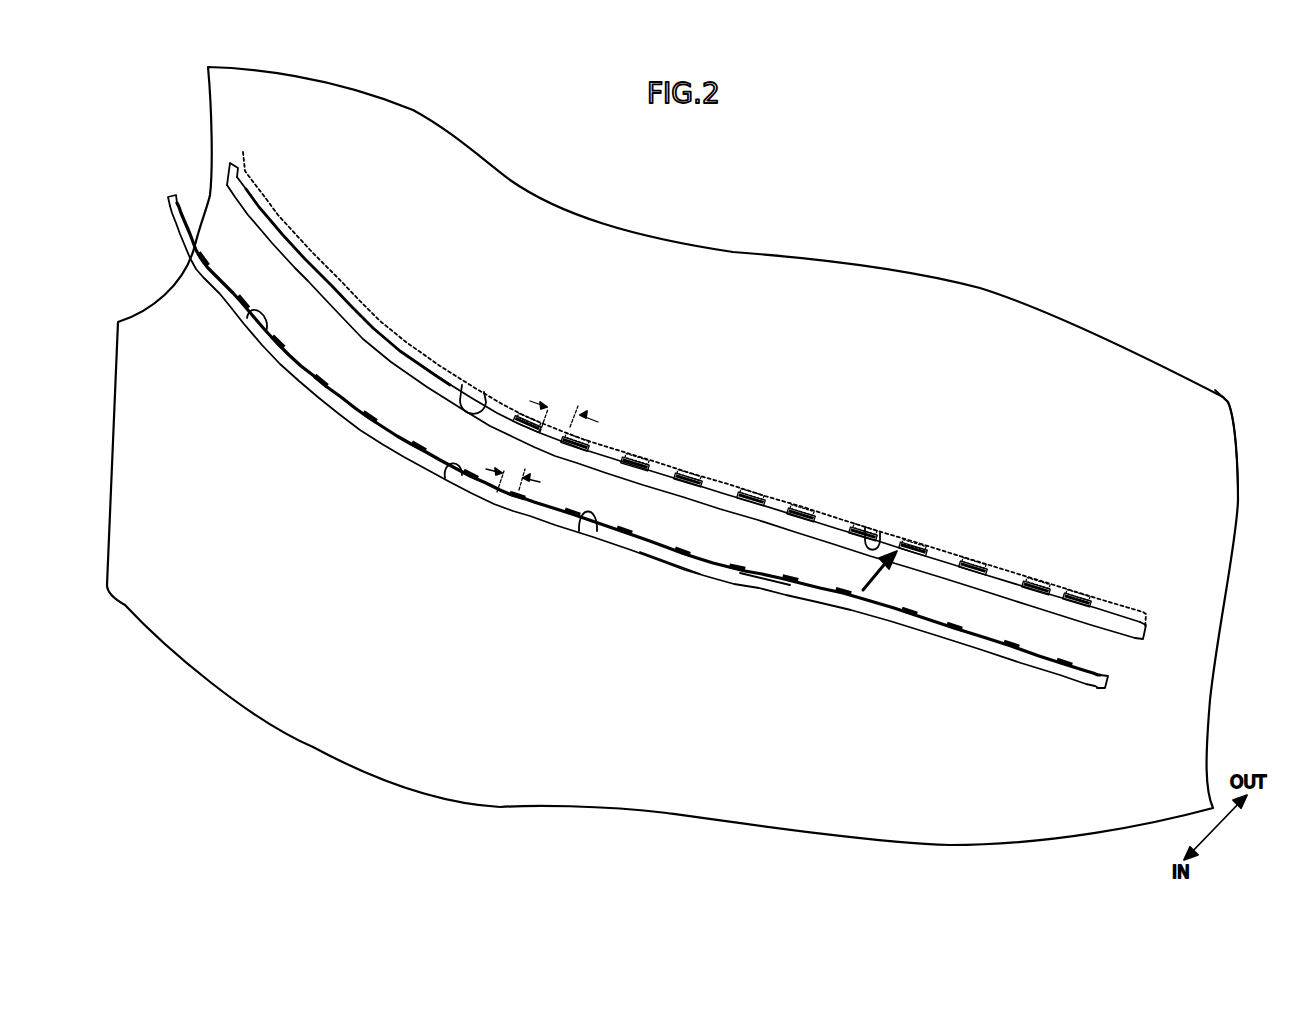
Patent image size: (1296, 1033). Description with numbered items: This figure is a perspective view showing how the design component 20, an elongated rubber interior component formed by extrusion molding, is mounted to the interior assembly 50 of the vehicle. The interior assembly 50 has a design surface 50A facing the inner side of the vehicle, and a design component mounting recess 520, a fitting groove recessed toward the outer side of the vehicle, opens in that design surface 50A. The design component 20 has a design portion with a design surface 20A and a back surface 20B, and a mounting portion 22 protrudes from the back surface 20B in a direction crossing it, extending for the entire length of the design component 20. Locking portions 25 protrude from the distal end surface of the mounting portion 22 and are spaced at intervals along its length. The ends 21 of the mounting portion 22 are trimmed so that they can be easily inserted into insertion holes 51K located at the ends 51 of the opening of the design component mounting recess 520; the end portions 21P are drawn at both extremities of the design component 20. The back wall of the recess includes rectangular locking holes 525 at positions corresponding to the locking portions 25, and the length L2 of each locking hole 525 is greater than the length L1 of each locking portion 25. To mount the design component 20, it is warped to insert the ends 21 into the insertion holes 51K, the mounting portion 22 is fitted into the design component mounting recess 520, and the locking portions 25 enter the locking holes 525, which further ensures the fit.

The design component 20 is at (765, 587).
The design surface 20A is at (672, 560).
The back surface 20B is at (597, 530).
The ends of the mounting portion 21 is at (172, 210).
The end portion of base tape 21P is at (172, 197).
The mounting portion 22 is at (266, 332).
The locking portions 25 is at (452, 470).
The interior assembly 50 is at (1147, 383).
The design surface 50A is at (1213, 410).
The ends of the opening 51 is at (243, 152).
The insertion holes 51K is at (228, 185).
The design component mounting recess 520 is at (865, 530).
The locking holes 525 is at (462, 385).
The length of locking portion L1 is at (513, 471).
The length of locking hole L2 is at (564, 409).